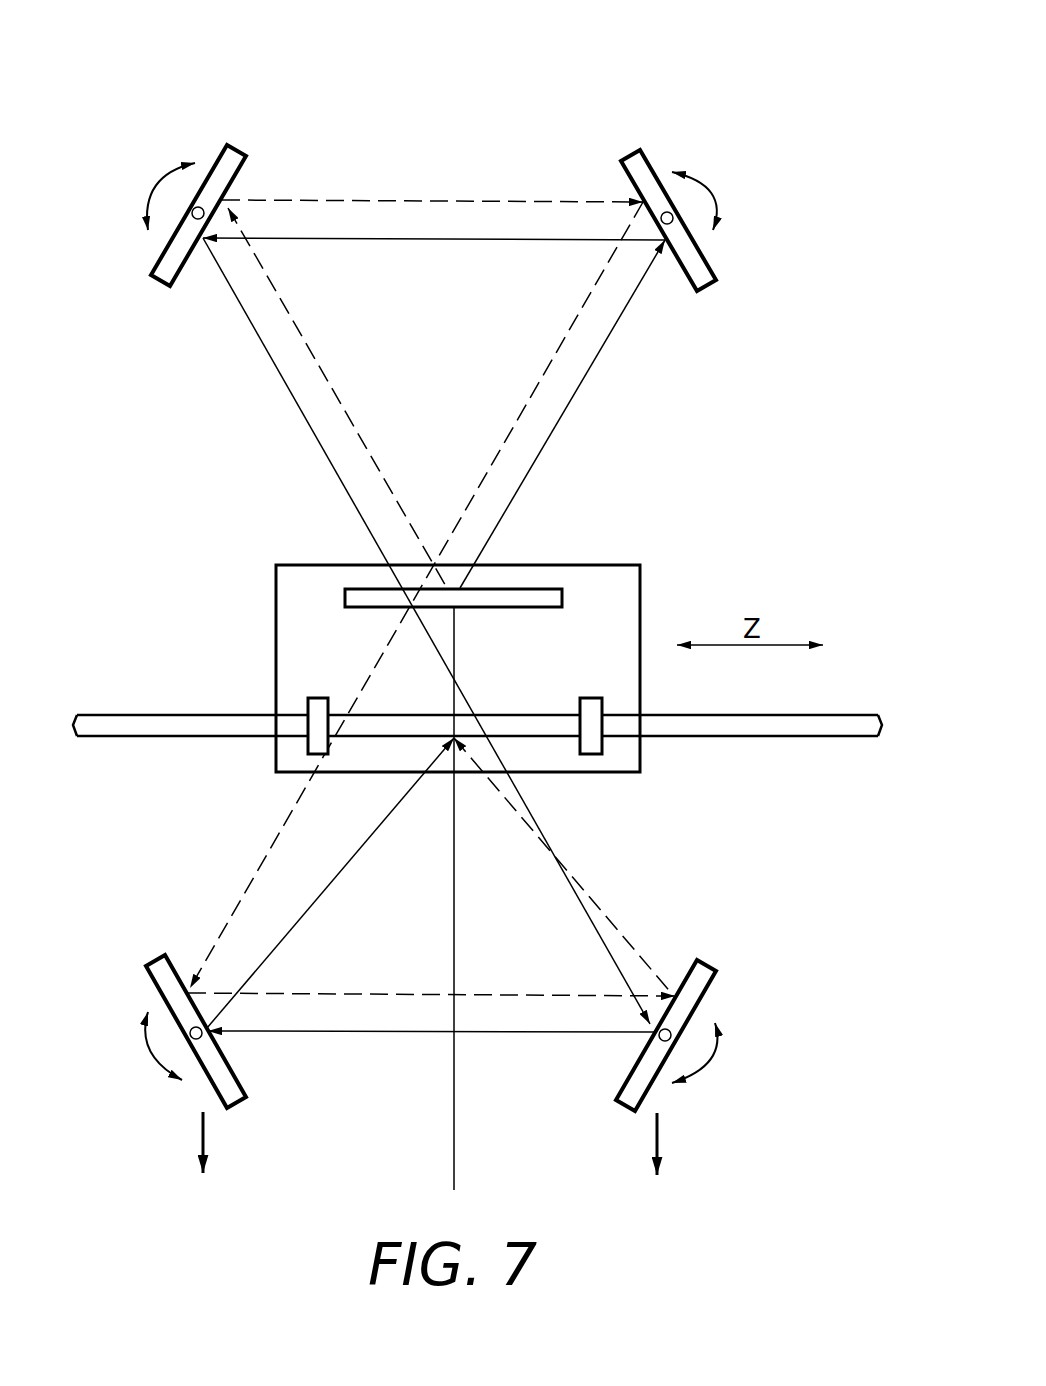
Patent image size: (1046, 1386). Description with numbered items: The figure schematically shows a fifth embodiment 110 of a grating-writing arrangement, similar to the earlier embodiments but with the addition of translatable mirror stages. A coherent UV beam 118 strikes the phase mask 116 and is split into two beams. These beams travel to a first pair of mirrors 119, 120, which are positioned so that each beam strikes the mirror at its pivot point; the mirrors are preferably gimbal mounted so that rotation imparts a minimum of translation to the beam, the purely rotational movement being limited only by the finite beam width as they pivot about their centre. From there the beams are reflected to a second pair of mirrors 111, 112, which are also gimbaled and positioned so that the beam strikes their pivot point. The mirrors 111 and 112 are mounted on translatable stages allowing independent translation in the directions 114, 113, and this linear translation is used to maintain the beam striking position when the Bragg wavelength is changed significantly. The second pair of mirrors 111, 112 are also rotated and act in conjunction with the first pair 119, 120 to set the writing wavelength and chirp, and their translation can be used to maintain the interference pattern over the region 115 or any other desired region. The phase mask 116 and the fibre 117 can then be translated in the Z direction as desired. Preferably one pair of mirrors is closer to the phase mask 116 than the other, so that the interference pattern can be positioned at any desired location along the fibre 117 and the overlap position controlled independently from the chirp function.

The embodiment 110 is at (733, 108).
The mirror 111 is at (700, 978).
The mirror 112 is at (155, 975).
The translation direction 113 is at (203, 1135).
The translation direction 114 is at (660, 1135).
The region 115 is at (446, 762).
The phase mask 116 is at (540, 588).
The fibre 117 is at (810, 728).
The coherent UV beam 118 is at (454, 1148).
The mirror 119 is at (700, 290).
The mirror 120 is at (160, 273).